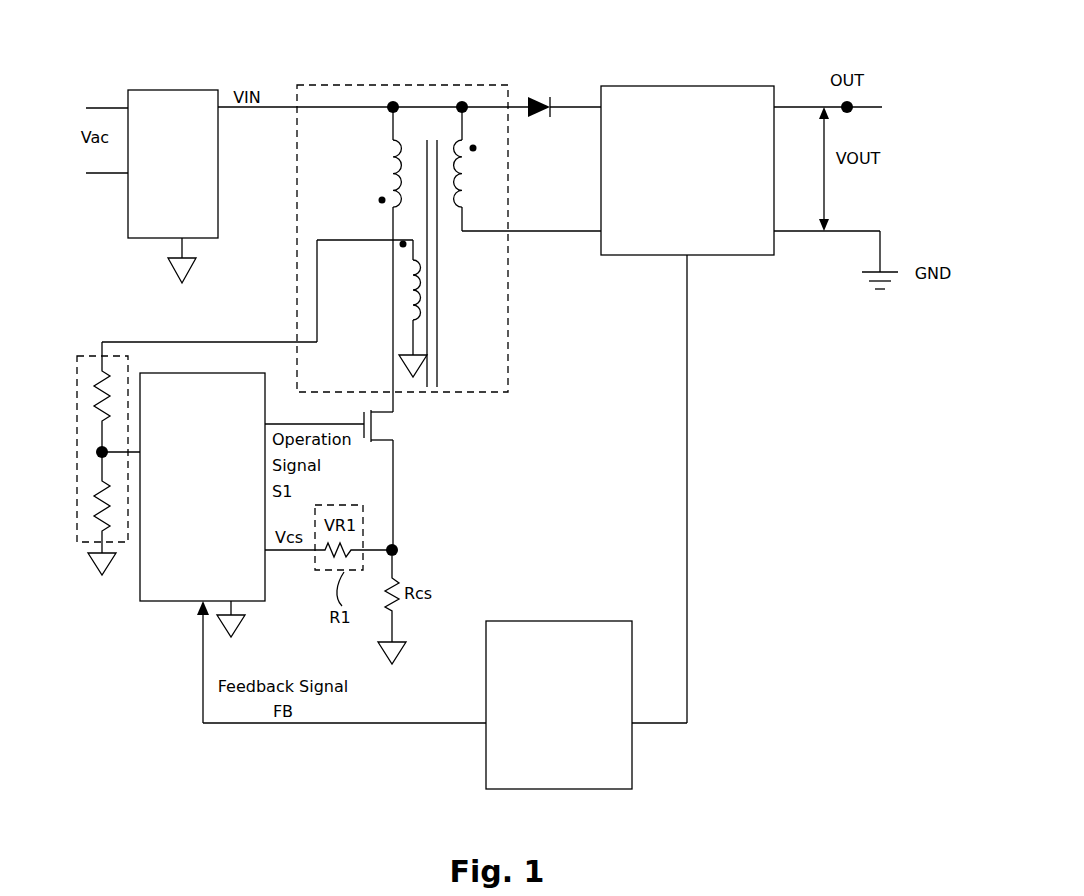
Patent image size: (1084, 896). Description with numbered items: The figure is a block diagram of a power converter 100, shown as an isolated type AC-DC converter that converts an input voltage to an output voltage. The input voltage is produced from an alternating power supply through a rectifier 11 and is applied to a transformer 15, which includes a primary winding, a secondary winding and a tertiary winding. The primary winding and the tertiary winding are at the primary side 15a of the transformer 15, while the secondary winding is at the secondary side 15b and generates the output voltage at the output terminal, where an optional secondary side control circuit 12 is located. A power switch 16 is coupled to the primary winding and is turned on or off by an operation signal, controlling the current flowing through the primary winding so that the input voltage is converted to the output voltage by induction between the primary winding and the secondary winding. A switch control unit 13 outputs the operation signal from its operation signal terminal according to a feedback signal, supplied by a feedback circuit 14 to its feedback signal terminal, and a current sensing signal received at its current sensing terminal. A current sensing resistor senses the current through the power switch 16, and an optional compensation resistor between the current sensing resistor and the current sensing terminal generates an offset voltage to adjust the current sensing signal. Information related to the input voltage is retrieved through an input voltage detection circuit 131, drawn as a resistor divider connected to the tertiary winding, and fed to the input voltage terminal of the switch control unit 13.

The power converter 100 is at (758, 54).
The rectifier 11 is at (152, 186).
The secondary side control circuit 12 is at (687, 170).
The switch control unit 13 is at (202, 505).
The feedback circuit 14 is at (559, 705).
The transformer 15 is at (432, 88).
The primary side 15a is at (358, 132).
The secondary side 15b is at (478, 130).
The power switch 16 is at (396, 424).
The input voltage detection circuit 131 is at (78, 355).